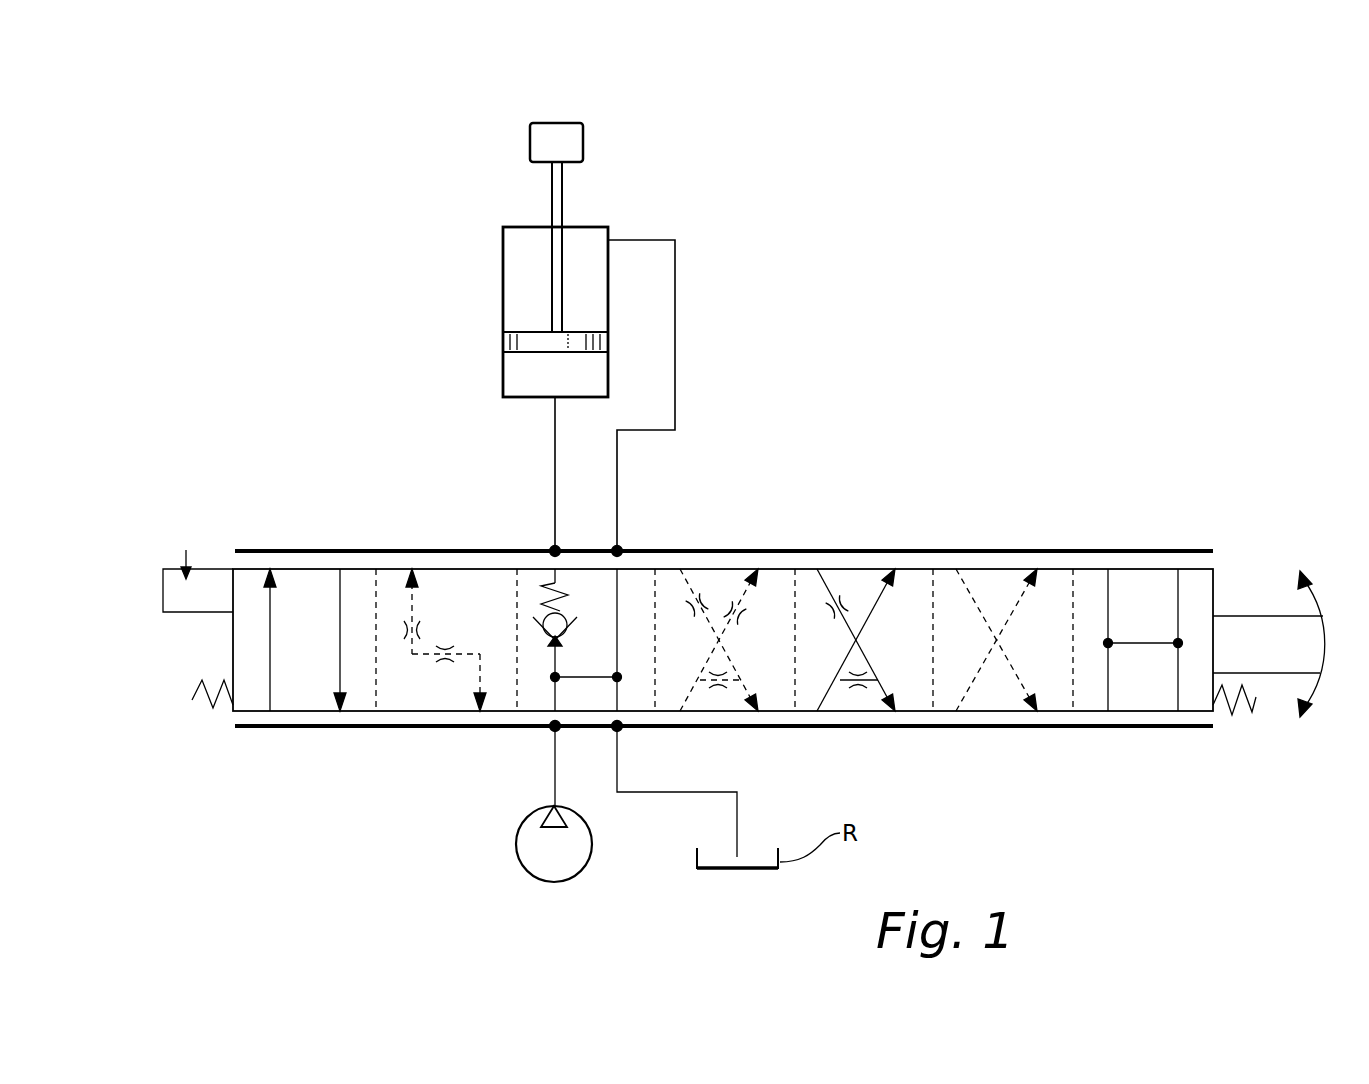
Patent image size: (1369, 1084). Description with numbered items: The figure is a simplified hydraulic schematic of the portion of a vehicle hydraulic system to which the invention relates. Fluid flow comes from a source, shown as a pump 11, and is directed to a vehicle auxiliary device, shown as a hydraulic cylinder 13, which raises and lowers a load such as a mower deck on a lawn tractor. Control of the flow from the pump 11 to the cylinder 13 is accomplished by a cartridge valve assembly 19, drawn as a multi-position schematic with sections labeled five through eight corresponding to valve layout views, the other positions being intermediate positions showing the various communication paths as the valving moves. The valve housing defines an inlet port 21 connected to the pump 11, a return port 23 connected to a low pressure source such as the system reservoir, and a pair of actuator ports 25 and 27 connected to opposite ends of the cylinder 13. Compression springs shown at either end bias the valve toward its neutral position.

The pump 11 is at (520, 863).
The hydraulic cylinder 13 is at (503, 287).
The cartridge valve assembly 19 is at (722, 668).
The inlet port 21 is at (555, 728).
The return port 23 is at (617, 728).
The actuator port 25 is at (555, 551).
The actuator port 27 is at (617, 551).